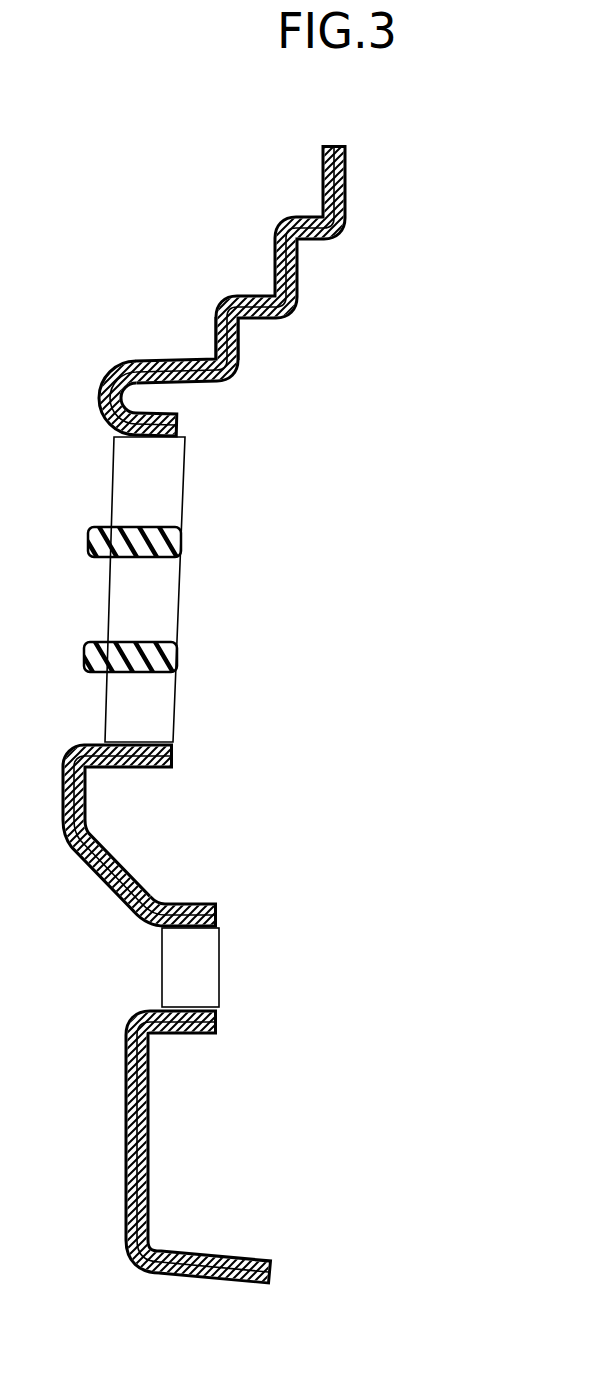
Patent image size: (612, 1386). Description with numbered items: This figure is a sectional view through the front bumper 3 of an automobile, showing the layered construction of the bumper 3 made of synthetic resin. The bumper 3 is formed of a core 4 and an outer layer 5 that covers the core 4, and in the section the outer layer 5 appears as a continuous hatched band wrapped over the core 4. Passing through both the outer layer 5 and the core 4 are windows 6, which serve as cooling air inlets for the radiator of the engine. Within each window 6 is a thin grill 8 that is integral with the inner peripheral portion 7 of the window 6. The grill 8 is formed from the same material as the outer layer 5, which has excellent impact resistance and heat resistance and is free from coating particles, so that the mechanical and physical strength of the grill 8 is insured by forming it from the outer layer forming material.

The bumper 3 is at (205, 710).
The core 4 is at (210, 381).
The outer layer 5 is at (163, 357).
The window 6 is at (132, 447).
The inner peripheral portion 7 is at (148, 762).
The grill 8 is at (173, 543).